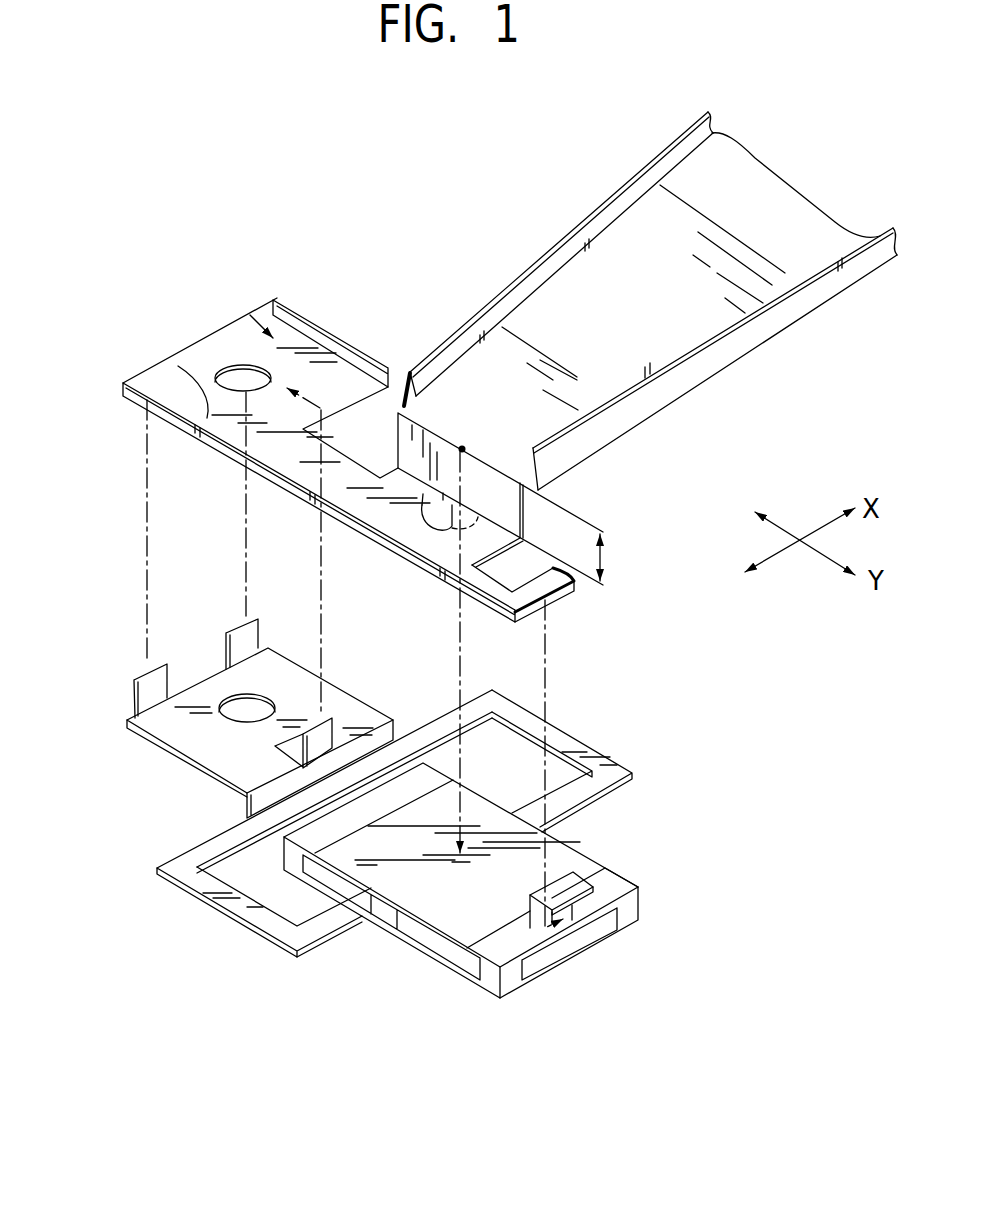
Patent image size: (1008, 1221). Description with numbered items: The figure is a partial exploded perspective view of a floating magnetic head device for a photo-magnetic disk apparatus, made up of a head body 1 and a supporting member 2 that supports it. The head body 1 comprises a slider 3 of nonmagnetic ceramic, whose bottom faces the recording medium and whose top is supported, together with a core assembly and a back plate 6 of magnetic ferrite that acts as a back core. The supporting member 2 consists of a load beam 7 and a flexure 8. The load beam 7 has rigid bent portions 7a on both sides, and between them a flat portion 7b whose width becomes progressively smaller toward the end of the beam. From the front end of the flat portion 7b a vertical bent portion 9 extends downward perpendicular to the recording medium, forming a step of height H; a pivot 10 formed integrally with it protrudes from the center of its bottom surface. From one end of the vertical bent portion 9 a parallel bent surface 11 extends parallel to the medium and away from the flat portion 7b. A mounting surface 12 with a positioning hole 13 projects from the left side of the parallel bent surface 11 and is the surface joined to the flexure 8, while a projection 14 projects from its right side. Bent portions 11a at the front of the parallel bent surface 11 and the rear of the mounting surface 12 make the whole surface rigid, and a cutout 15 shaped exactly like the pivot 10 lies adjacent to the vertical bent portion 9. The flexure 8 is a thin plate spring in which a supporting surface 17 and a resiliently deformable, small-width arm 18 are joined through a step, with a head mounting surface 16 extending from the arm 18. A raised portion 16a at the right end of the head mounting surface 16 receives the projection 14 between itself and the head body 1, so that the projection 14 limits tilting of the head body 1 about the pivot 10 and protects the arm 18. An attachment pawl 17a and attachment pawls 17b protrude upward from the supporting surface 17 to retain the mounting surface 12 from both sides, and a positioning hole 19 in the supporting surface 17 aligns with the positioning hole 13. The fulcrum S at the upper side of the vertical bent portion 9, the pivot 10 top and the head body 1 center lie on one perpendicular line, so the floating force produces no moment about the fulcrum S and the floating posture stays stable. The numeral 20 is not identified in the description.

The head body 1 is at (483, 915).
The supporting member 2 is at (339, 542).
The slider 3 is at (507, 982).
The back plate 6 is at (503, 948).
The load beam 7 is at (648, 301).
The bent portions 7a is at (580, 232).
The flat portion 7b is at (750, 198).
The flexure 8 is at (381, 843).
The vertical bent portion 9 is at (398, 452).
The pivot 10 is at (512, 516).
The parallel bent surface 11 is at (390, 506).
The bent portions 11a is at (318, 335).
The mounting surface 12 is at (222, 352).
The positioning hole 13 is at (236, 372).
The projection 14 is at (553, 573).
The cutout 15 is at (421, 508).
The head mounting surface 16 is at (450, 897).
The raised portion 16a is at (578, 878).
The supporting surface 17 is at (233, 702).
The attachment pawl 17a is at (334, 731).
The attachment pawls 17b is at (243, 633).
The arm 18 is at (566, 740).
The positioning hole 19 is at (248, 705).
The bent flange 20 is at (285, 747).
The fulcrum S is at (462, 444).
The height H is at (612, 557).